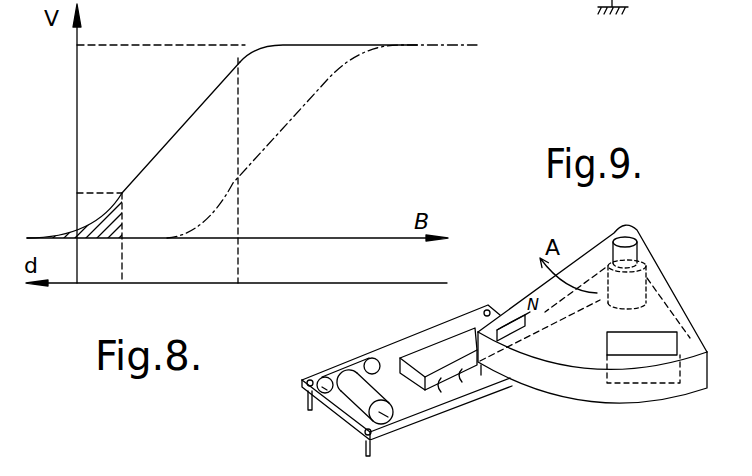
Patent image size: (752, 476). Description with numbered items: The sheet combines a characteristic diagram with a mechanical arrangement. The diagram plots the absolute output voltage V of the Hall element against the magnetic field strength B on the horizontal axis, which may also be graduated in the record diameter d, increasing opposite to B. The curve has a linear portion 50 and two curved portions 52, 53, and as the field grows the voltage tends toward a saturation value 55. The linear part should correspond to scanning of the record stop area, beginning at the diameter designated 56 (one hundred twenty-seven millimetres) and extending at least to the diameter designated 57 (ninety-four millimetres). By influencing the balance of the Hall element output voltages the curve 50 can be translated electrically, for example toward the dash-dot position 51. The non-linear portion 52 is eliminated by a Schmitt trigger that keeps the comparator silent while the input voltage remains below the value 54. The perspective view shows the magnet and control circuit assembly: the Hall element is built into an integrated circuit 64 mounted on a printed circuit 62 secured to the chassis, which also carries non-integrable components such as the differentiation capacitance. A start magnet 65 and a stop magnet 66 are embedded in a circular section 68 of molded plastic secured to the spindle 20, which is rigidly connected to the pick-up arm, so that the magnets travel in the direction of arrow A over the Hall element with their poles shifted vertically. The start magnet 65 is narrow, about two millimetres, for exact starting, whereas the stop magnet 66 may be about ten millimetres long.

In FIG. 9, the spindle 20 is at (627, 238).
In FIG. 8, the linear portion 50 is at (222, 125).
In FIG. 8, the translated curve position 51 is at (258, 151).
In FIG. 8, the non-linear curved portion 52 is at (100, 218).
In FIG. 8, the curved portion 53 is at (239, 60).
In FIG. 8, the threshold voltage value 54 is at (83, 185).
In FIG. 8, the saturation value 55 is at (145, 45).
In FIG. 8, the starting diameter 56 is at (122, 283).
In FIG. 8, the end diameter 57 is at (238, 283).
In FIG. 9, the printed circuit 62 is at (343, 408).
In FIG. 9, the integrated circuit 64 is at (443, 358).
In FIG. 9, the start magnet 65 is at (509, 320).
In FIG. 9, the stop magnet 66 is at (664, 352).
In FIG. 9, the circular section 68 is at (667, 288).